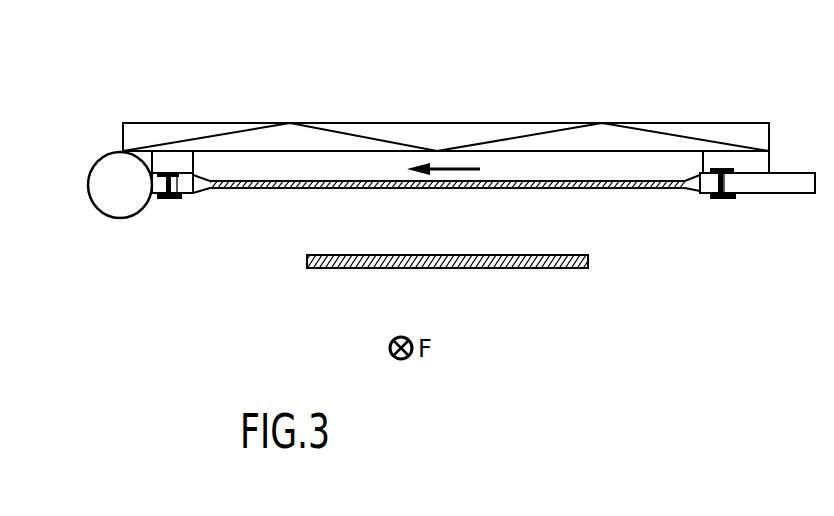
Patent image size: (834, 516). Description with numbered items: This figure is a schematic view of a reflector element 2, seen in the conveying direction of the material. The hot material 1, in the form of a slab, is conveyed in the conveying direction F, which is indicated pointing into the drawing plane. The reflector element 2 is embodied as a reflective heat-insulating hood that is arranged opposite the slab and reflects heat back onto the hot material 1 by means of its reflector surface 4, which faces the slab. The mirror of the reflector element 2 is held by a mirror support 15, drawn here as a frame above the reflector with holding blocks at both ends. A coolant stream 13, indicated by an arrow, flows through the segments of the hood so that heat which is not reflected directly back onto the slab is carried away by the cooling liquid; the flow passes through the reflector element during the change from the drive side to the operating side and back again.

The hot material 1 is at (577, 268).
The reflector element 2 is at (645, 187).
The reflector surface 4 is at (282, 190).
The coolant stream 13 is at (439, 167).
The mirror support 15 is at (367, 130).